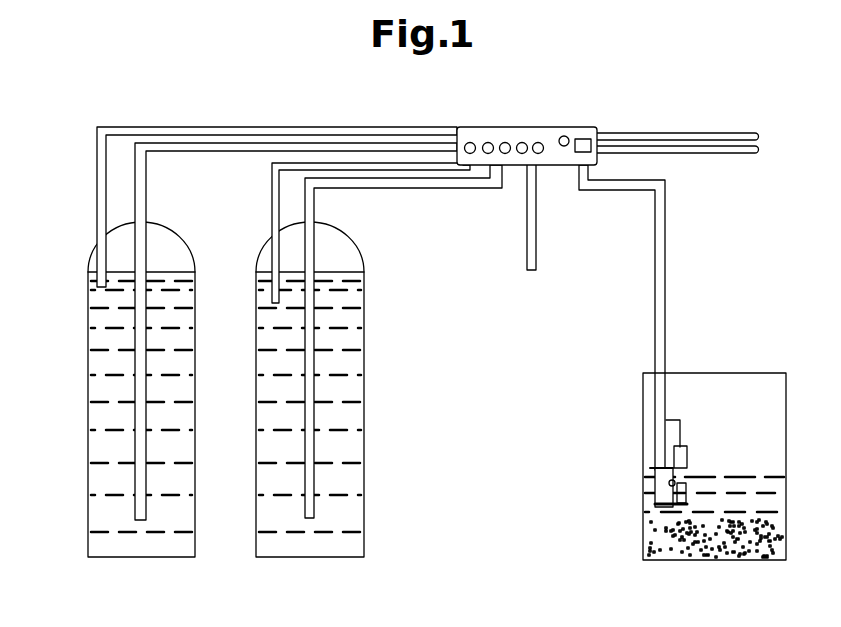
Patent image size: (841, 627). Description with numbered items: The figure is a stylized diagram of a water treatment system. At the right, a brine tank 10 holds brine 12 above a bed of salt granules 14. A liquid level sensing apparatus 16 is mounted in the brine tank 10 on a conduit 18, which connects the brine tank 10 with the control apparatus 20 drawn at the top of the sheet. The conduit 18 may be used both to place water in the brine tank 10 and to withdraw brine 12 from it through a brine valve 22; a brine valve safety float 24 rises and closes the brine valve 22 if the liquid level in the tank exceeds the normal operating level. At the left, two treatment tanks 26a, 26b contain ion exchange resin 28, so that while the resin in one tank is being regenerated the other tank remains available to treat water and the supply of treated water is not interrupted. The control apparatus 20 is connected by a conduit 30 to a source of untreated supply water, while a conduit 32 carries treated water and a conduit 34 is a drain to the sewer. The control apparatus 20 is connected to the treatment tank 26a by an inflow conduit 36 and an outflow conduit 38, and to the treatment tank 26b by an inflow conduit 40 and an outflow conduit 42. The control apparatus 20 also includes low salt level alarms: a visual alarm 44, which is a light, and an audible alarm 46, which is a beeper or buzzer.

The brine tank 10 is at (773, 399).
The brine 12 is at (777, 488).
The salt granules 14 is at (787, 542).
The liquid level sensing apparatus 16 is at (655, 476).
The conduit 18 is at (663, 277).
The control apparatus 20 is at (500, 133).
The brine valve 22 is at (655, 503).
The brine valve safety float 24 is at (678, 447).
The treatment tank 26a is at (88, 413).
The treatment tank 26b is at (365, 382).
The ion exchange resin 28 is at (100, 485).
The conduit 30 is at (682, 132).
The conduit 32 is at (694, 151).
The conduit 34 is at (531, 258).
The inflow conduit 36 is at (97, 183).
The outflow conduit 38 is at (146, 190).
The inflow conduit 40 is at (272, 222).
The outflow conduit 42 is at (312, 210).
The visual alarm 44 is at (561, 136).
The audible alarm 46 is at (584, 138).